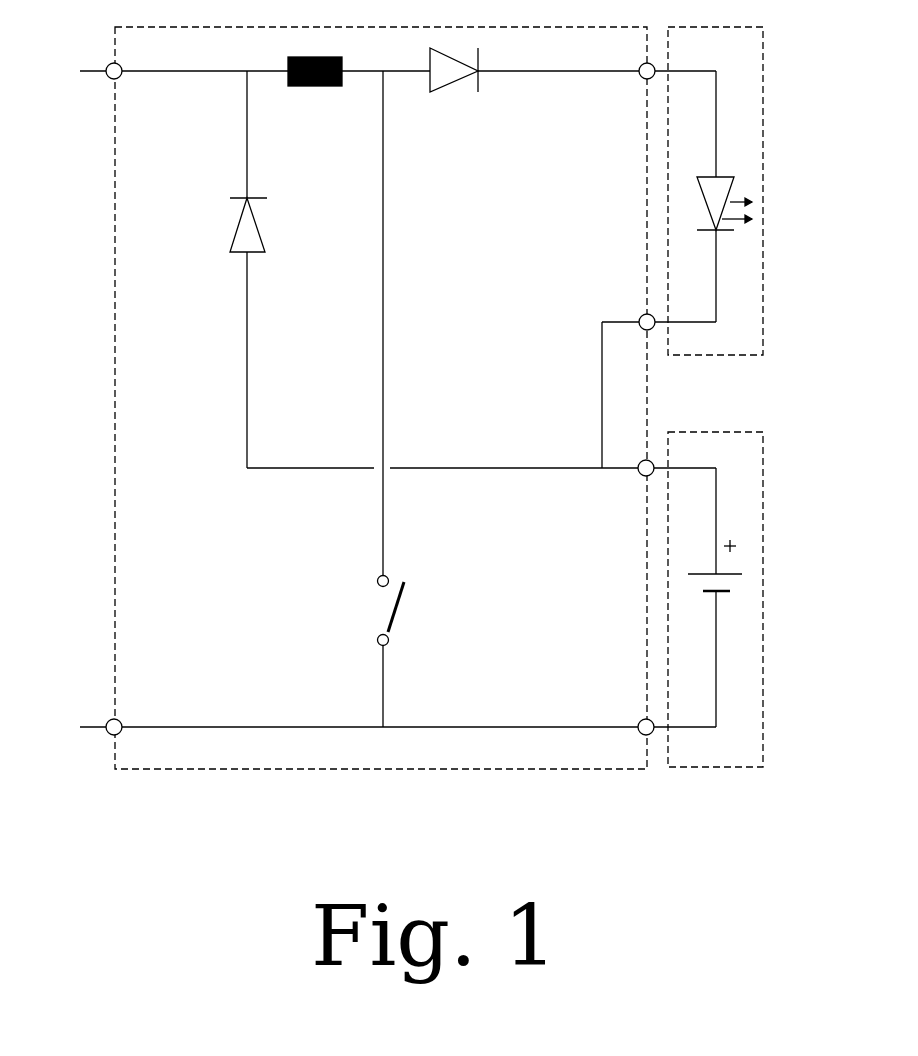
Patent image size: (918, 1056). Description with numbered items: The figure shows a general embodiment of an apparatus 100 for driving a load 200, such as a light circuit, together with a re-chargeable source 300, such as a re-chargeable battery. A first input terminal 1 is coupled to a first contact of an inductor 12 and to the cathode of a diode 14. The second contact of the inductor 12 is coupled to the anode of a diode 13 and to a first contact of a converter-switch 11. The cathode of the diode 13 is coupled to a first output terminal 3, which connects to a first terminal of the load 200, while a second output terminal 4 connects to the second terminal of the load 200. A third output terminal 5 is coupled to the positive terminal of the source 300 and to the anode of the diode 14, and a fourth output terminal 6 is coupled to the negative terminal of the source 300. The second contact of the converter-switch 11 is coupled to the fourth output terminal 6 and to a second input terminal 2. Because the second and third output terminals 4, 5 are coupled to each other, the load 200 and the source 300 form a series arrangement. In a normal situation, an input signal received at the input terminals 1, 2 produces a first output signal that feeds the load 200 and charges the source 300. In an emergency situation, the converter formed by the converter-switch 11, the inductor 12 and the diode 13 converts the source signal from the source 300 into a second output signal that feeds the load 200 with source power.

The first input terminal 1 is at (123, 84).
The second input terminal 2 is at (123, 713).
The first output terminal 3 is at (636, 85).
The second output terminal 4 is at (637, 311).
The third output terminal 5 is at (636, 455).
The fourth output terminal 6 is at (637, 713).
The converter-switch 11 is at (405, 611).
The inductor 12 is at (315, 89).
The diode 13 is at (454, 84).
The diode 14 is at (233, 225).
The apparatus 100 is at (612, 769).
The load 200 is at (727, 355).
The re-chargeable source 300 is at (724, 767).